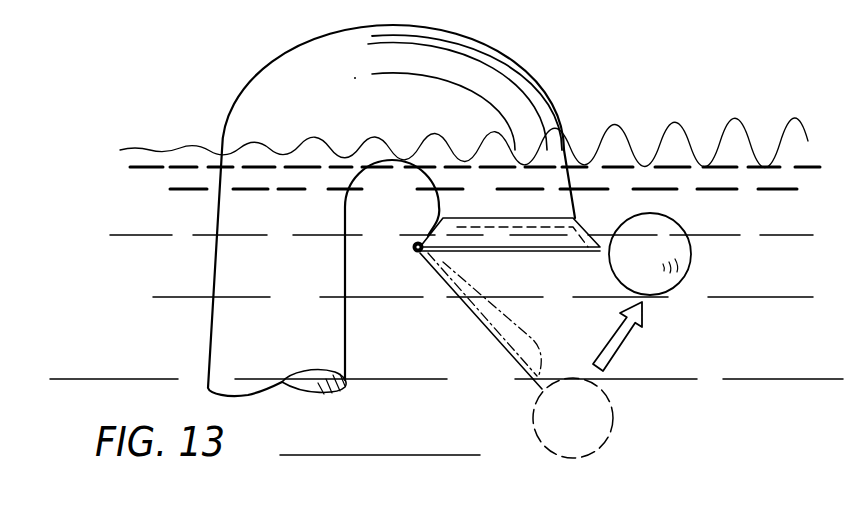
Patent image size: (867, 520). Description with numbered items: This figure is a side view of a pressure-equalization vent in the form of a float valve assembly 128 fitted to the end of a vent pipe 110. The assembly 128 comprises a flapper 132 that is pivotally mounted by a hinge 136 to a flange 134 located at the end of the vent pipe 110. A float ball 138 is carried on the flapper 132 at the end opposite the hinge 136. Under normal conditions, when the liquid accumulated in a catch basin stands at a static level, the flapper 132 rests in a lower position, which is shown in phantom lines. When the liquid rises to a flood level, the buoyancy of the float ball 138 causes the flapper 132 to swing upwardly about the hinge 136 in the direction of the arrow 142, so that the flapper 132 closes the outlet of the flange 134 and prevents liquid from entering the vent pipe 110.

The vent pipe 110 is at (283, 66).
The flange 134 is at (428, 174).
The hinge 136 is at (413, 246).
The flapper 132 is at (547, 254).
The float ball 138 is at (691, 255).
The float valve assembly 128 is at (678, 291).
The arrow 142 is at (622, 343).